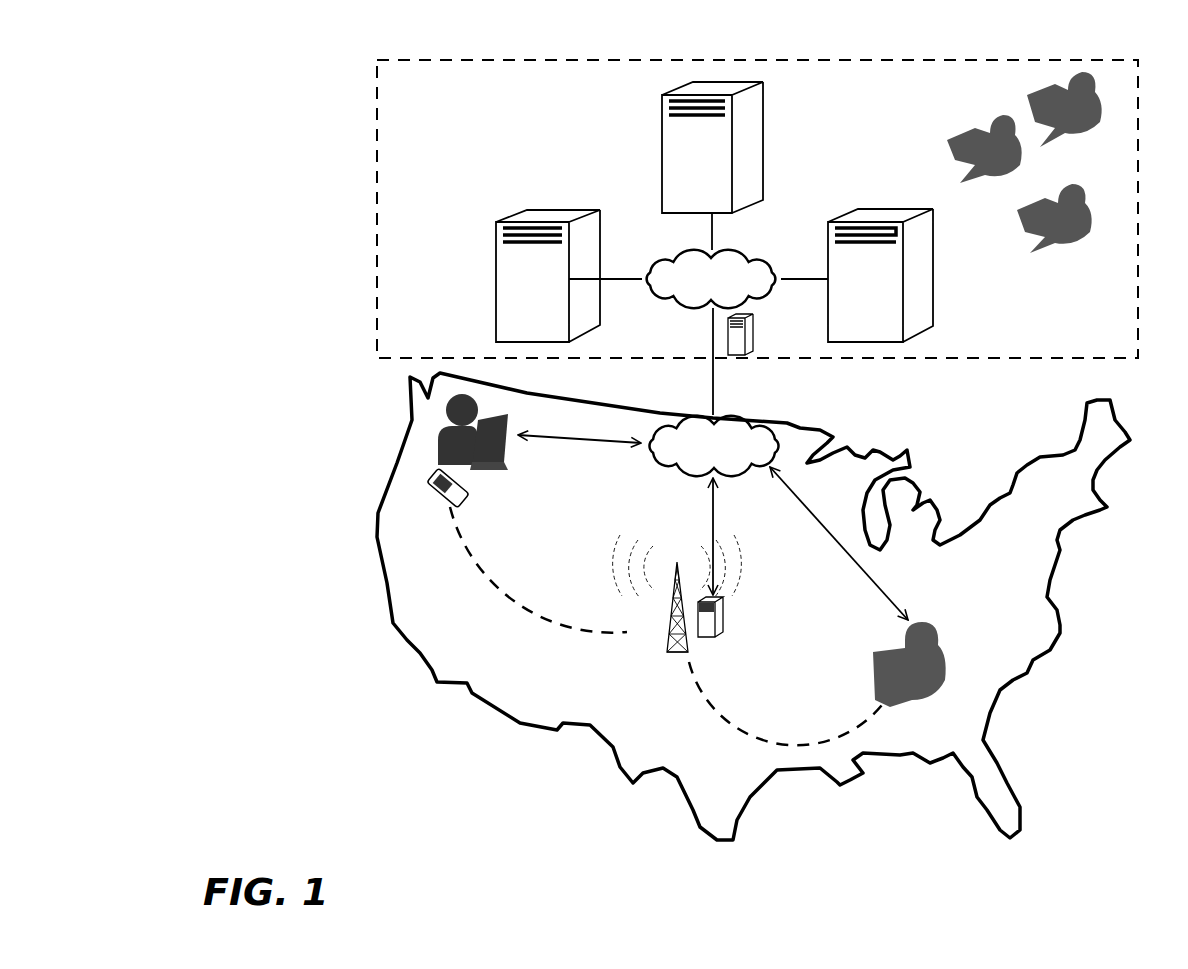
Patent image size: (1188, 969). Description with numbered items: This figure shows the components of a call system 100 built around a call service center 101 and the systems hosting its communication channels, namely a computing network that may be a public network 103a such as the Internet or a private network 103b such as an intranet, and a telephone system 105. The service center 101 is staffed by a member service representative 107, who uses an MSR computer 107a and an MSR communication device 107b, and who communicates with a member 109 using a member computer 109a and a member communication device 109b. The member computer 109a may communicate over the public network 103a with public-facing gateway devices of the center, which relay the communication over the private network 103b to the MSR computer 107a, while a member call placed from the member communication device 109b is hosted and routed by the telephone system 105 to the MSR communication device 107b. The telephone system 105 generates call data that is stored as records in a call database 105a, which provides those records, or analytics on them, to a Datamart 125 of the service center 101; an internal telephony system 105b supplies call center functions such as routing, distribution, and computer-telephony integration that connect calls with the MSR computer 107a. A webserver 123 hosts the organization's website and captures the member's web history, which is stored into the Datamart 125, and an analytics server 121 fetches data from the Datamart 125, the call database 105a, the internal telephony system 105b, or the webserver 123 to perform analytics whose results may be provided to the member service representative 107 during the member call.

The call system 100 is at (238, 75).
The call service center 101 is at (757, 209).
The public network 103a is at (713, 518).
The private network 103b is at (698, 314).
The telephone system 105 is at (650, 655).
The call database 105a is at (723, 632).
The internal telephony system 105b is at (753, 353).
The member service representative 107 is at (967, 650).
The MSR computer 107a is at (875, 657).
The MSR communication device 107b is at (930, 632).
The member 109 is at (428, 422).
The member computer 109a is at (513, 453).
The member communication device 109b is at (467, 493).
The analytics server 121 is at (548, 276).
The webserver 123 is at (712, 147).
The Datamart 125 is at (880, 275).